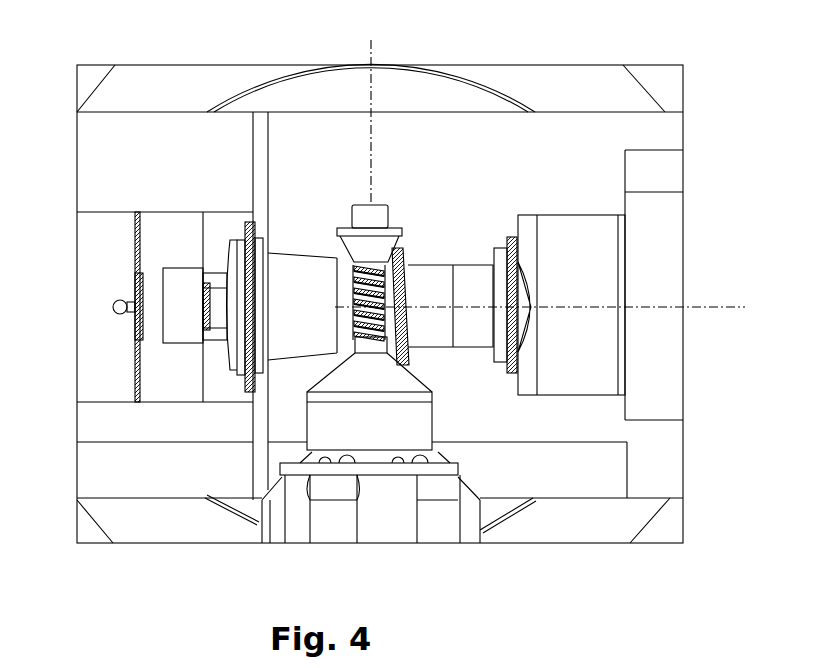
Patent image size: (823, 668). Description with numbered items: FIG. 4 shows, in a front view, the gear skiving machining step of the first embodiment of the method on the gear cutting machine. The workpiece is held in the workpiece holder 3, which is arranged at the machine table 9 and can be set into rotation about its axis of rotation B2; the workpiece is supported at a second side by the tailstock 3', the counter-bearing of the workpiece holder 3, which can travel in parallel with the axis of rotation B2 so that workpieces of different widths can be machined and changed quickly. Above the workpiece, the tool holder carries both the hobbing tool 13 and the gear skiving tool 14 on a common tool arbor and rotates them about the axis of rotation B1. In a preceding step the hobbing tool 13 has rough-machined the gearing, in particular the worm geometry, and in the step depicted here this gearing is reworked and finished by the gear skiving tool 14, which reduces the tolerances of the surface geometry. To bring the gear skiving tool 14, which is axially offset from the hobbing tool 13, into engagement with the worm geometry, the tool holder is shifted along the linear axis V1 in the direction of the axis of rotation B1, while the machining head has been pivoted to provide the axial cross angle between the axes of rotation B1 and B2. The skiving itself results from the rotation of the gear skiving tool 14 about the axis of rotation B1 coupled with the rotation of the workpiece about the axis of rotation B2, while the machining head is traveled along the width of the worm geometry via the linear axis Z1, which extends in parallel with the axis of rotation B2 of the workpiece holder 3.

The workpiece holder 3 is at (464, 421).
The tailstock 3' is at (403, 221).
The machine table 9 is at (380, 527).
The hobbing tool 13 is at (246, 224).
The gear skiving tool 14 is at (403, 269).
The axis of rotation of the tool holder B1 is at (586, 323).
The axis of rotation of the workpiece holder B2 is at (395, 44).
The linear axis V1 is at (573, 127).
The linear axis Z1 is at (66, 252).